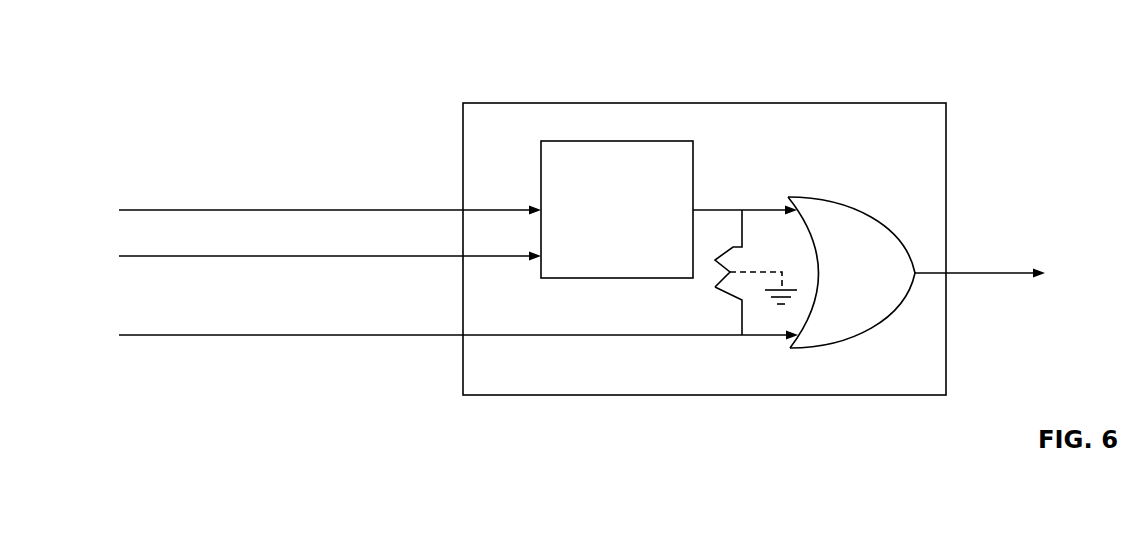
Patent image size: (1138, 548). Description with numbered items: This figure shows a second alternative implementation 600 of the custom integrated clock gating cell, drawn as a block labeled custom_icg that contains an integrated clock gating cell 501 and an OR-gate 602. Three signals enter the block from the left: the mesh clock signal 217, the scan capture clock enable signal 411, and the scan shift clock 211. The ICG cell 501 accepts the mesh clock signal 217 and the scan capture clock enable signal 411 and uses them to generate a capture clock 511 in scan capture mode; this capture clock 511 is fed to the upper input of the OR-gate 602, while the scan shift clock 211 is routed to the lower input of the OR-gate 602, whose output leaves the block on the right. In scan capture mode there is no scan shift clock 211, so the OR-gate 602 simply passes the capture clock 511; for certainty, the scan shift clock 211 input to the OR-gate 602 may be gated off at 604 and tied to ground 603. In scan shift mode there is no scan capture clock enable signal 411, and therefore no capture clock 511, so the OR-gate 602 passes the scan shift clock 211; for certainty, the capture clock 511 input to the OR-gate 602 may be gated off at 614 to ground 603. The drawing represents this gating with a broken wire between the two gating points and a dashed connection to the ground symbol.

The implementation 600 is at (174, 60).
The mesh clock signal 217 is at (318, 208).
The scan capture clock enable signal 411 is at (188, 258).
The scan shift clock 211 is at (255, 337).
The integrated clock gating cell 501 is at (607, 140).
The capture clock 511 is at (770, 207).
The gating-off point of capture clock input 614 is at (733, 245).
The gating-off point of scan shift clock input 604 is at (733, 307).
The ground 603 is at (788, 283).
The OR-gate 602 is at (845, 197).